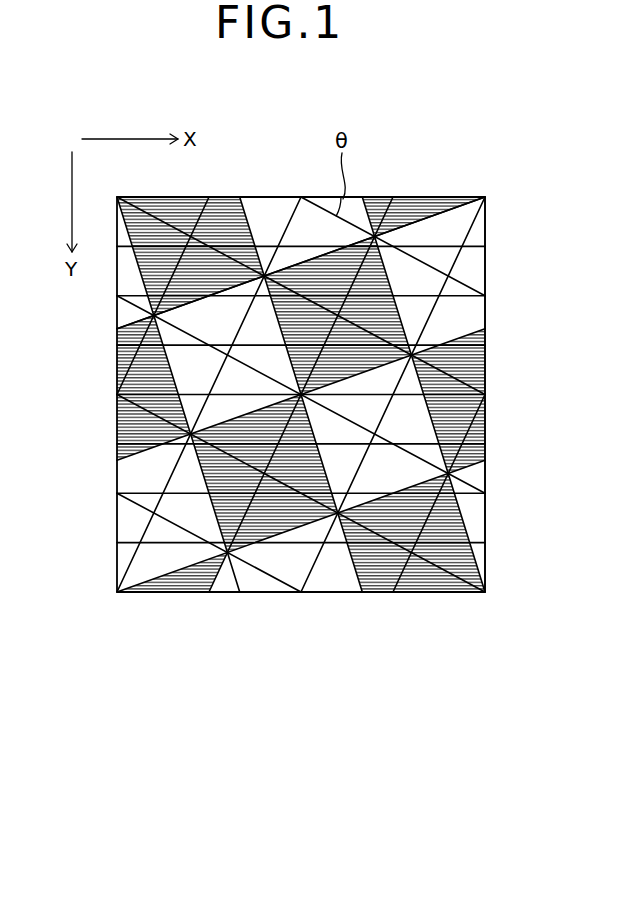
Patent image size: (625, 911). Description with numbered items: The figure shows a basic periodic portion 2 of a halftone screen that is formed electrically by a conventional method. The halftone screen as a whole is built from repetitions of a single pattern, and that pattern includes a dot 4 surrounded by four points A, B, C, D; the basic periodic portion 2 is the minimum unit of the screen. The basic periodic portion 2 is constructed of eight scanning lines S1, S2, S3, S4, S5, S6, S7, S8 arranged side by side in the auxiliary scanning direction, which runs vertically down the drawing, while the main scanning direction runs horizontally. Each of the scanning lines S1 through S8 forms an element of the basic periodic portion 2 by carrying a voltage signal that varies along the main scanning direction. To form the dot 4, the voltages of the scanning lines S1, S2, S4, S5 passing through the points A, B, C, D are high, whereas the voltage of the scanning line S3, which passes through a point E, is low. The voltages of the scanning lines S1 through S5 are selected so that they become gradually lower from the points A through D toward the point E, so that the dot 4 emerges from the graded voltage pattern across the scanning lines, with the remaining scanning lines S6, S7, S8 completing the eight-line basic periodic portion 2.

The basic periodic portion 2 is at (111, 558).
The dot 4 is at (416, 247).
The point A is at (303, 199).
The point B is at (227, 357).
The point C is at (376, 434).
The point D is at (448, 247).
The point E is at (374, 236).
The scanning line S1 is at (480, 232).
The scanning line S2 is at (480, 280).
The scanning line S3 is at (480, 327).
The scanning line S4 is at (480, 380).
The scanning line S5 is at (480, 432).
The scanning line S6 is at (480, 477).
The scanning line S7 is at (480, 523).
The scanning line S8 is at (480, 569).